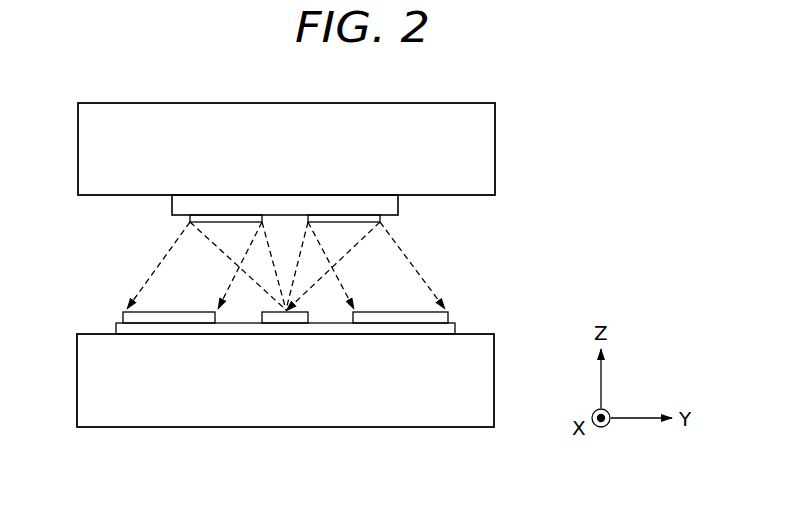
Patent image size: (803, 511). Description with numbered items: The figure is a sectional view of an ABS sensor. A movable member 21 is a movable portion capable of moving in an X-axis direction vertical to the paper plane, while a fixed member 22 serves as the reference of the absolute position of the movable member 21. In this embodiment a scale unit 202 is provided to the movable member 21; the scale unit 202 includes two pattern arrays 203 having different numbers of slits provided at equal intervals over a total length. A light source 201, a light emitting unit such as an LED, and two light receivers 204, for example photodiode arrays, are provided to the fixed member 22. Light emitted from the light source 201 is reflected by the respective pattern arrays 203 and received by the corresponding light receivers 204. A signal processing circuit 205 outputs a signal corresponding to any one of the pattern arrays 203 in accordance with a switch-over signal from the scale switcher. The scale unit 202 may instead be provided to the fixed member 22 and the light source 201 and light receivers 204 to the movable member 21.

The movable member 21 is at (496, 147).
The fixed member 22 is at (495, 379).
The light source 201 is at (266, 318).
The scale unit 202 is at (399, 212).
The pattern array 203 is at (191, 220).
The light receiver 204 is at (124, 318).
The signal processing circuit 205 is at (456, 328).